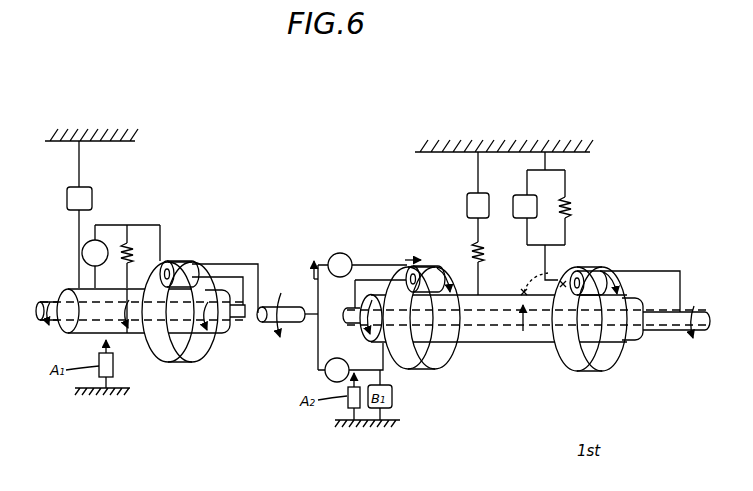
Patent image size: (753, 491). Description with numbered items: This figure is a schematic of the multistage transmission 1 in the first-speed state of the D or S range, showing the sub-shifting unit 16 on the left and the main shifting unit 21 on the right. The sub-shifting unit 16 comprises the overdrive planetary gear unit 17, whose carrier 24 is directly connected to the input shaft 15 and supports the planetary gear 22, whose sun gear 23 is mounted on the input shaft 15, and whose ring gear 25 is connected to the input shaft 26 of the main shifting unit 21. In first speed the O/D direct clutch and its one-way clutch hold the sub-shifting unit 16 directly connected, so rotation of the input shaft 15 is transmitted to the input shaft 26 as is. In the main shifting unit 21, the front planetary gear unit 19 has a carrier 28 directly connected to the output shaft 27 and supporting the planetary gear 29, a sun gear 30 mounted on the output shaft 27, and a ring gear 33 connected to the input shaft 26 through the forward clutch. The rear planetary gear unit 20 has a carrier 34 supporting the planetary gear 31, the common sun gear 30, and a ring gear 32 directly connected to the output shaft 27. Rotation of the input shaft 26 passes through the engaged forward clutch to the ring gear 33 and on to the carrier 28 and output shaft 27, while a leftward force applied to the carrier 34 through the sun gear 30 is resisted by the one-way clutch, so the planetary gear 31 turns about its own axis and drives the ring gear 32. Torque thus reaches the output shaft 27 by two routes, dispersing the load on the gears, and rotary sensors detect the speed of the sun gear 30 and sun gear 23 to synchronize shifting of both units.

The multistage transmission 1 is at (323, 100).
The input shaft 15 is at (53, 300).
The sub-shifting unit 16 is at (176, 226).
The overdrive planetary gear unit 17 is at (204, 257).
The front planetary gear unit 19 is at (431, 253).
The rear planetary gear unit 20 is at (603, 248).
The main shifting unit 21 is at (407, 228).
The planetary gear 22 is at (168, 259).
The sun gear 23 is at (128, 334).
The carrier 24 is at (160, 225).
The ring gear 25 is at (205, 352).
The input shaft 26 is at (292, 323).
The output shaft 27 is at (670, 331).
The carrier 28 is at (377, 280).
The planetary gear 29 is at (410, 273).
The sun gear 30 is at (507, 343).
The planetary gear 31 is at (575, 270).
The ring gear 32 is at (614, 270).
The ring gear 33 is at (437, 369).
The carrier 34 is at (563, 284).